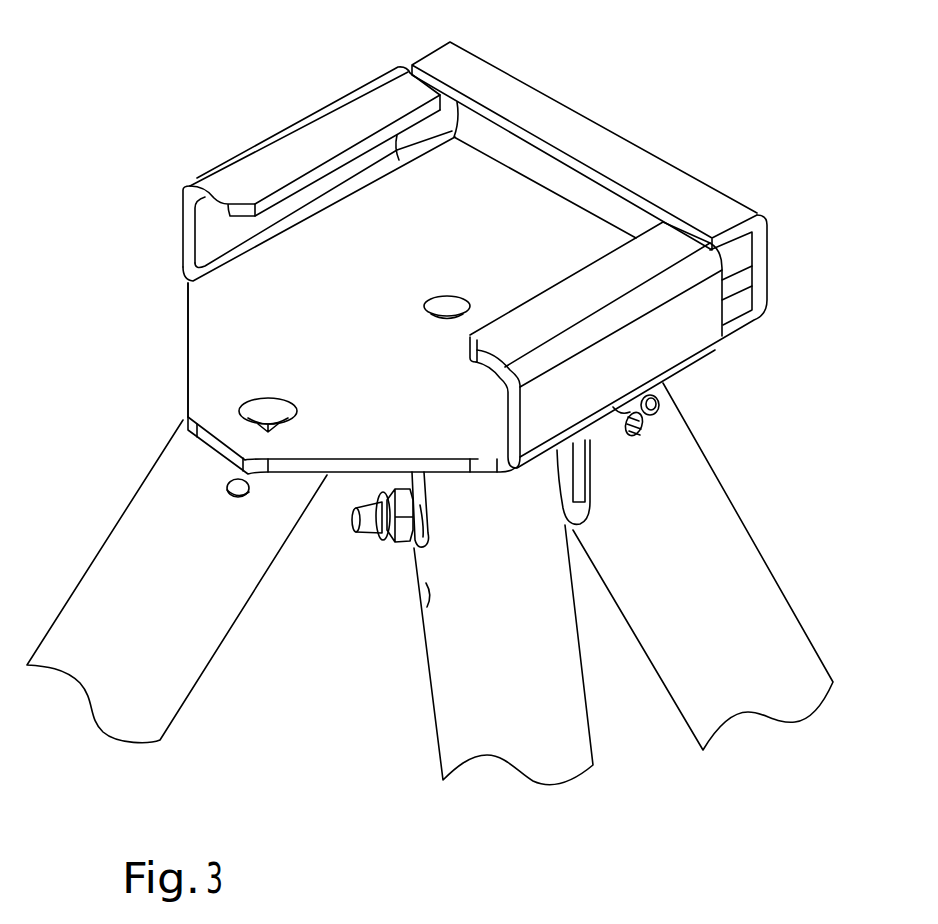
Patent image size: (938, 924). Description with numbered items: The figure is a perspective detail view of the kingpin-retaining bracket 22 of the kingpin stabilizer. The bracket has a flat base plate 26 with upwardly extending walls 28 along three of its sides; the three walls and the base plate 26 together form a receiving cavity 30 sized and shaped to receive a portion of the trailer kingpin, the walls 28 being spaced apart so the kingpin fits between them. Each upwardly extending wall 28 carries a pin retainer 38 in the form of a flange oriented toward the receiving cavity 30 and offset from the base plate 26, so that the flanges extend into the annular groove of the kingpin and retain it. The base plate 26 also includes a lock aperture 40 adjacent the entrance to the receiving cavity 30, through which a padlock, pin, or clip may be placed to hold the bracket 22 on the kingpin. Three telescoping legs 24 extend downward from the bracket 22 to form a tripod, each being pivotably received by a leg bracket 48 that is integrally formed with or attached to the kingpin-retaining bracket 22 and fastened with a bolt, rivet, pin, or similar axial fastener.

The kingpin-retaining bracket 22 is at (470, 312).
The telescoping legs 24 is at (463, 635).
The base plate 26 is at (391, 285).
The upwardly extending walls 28 is at (770, 254).
The receiving cavity 30 is at (270, 286).
The pin retainer 38 is at (298, 143).
The lock aperture 40 is at (263, 400).
The leg bracket 48 is at (420, 548).